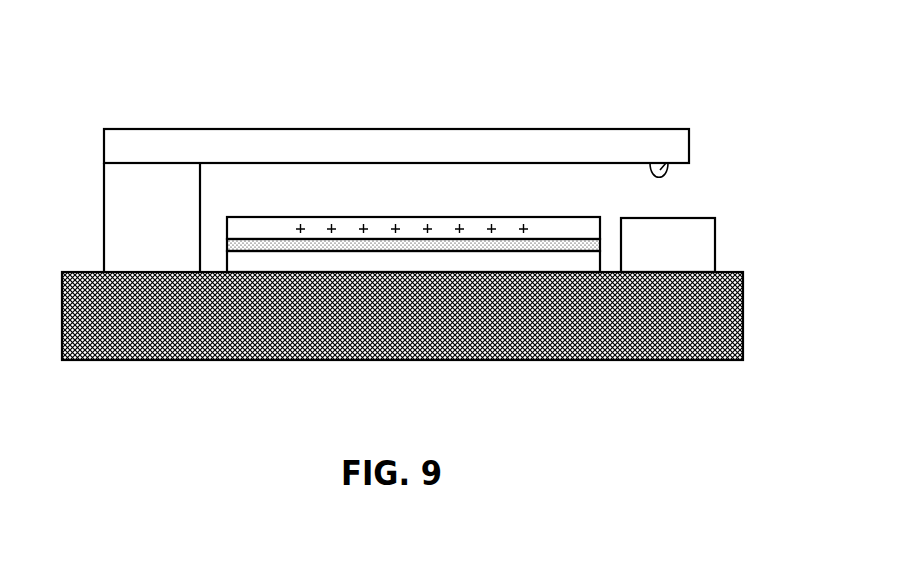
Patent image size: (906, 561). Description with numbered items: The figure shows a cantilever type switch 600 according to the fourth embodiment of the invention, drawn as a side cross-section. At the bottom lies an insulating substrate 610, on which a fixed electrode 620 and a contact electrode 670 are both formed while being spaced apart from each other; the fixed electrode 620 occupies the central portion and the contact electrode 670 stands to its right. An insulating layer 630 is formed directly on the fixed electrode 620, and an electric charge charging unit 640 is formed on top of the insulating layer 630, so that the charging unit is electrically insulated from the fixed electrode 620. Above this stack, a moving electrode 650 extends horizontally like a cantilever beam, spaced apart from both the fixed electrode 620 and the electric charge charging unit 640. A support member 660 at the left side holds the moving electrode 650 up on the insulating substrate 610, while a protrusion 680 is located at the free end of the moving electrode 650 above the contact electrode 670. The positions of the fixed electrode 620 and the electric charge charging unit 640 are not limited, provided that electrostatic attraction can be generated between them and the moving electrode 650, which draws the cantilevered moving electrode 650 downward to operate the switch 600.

The cantilever type switch 600 is at (81, 36).
The insulating substrate 610 is at (623, 348).
The fixed electrode 620 is at (567, 259).
The insulating layer 630 is at (553, 240).
The electric charge charging unit 640 is at (508, 227).
The moving electrode 650 is at (240, 148).
The support member 660 is at (133, 232).
The contact electrode 670 is at (693, 248).
The protrusion 680 is at (666, 164).